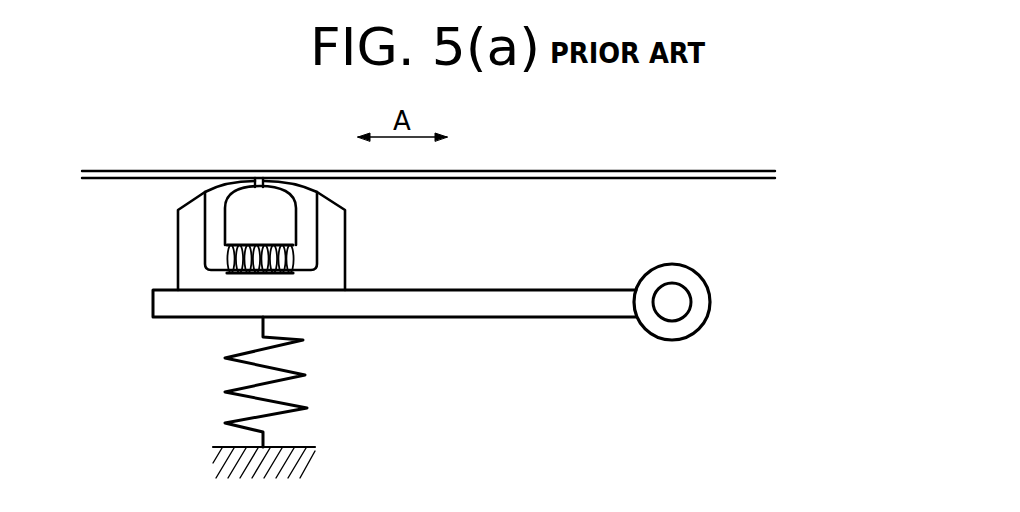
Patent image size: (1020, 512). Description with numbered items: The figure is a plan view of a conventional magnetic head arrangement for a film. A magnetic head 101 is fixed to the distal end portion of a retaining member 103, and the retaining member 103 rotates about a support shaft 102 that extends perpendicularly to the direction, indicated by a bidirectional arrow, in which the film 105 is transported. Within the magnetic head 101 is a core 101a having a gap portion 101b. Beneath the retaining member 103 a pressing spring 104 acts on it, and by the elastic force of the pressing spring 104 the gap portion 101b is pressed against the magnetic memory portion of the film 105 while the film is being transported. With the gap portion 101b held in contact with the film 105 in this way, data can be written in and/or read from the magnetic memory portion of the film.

The magnetic head 101 is at (188, 272).
The core 101a is at (207, 235).
The gap portion 101b is at (258, 180).
The support shaft 102 is at (668, 314).
The retaining member 103 is at (508, 311).
The pressing spring 104 is at (303, 376).
The film 105 is at (166, 171).